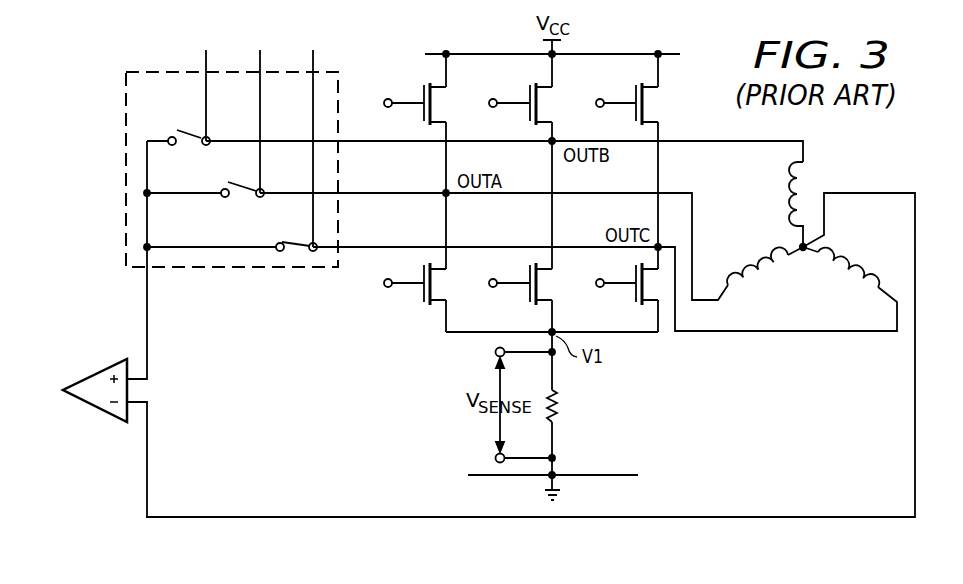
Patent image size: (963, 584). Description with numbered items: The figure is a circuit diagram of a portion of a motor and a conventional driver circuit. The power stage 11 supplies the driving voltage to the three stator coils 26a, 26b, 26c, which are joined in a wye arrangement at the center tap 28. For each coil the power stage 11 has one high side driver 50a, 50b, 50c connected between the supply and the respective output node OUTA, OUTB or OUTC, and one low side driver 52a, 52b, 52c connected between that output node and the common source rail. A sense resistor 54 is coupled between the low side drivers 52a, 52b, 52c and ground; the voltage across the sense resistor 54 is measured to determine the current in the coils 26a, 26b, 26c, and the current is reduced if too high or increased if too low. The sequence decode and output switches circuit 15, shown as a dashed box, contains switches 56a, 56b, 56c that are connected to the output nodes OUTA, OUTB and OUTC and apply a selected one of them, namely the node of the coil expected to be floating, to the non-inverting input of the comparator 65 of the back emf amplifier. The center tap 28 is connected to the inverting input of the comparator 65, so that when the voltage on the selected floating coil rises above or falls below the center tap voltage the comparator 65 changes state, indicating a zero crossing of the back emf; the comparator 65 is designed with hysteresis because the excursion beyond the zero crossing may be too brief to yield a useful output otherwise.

The power stage 11 is at (436, 366).
The sequence decode and output switches circuit 15 is at (125, 163).
The stator coil 26a is at (757, 254).
The stator coil 26b is at (788, 186).
The stator coil 26c is at (863, 261).
The center tap 28 is at (805, 252).
The high side driver 50a is at (420, 97).
The high side driver 50b is at (526, 97).
The high side driver 50c is at (632, 97).
The low side driver 52a is at (418, 295).
The low side driver 52b is at (524, 295).
The low side driver 52c is at (630, 295).
The sense resistor 54 is at (557, 400).
The switch 56a is at (192, 133).
The switch 56b is at (240, 185).
The switch 56c is at (297, 243).
The comparator 65 is at (93, 409).